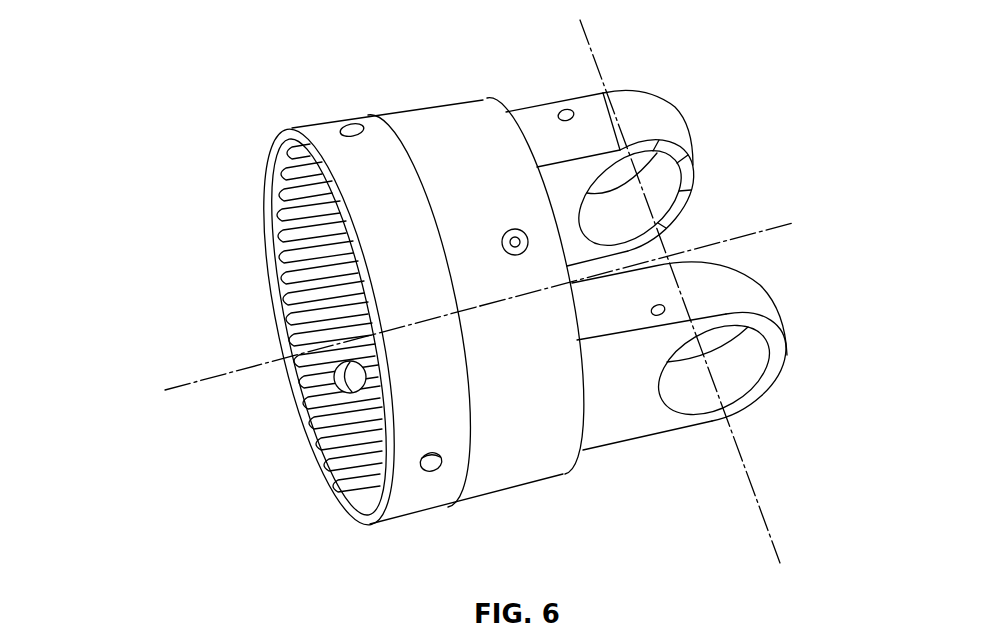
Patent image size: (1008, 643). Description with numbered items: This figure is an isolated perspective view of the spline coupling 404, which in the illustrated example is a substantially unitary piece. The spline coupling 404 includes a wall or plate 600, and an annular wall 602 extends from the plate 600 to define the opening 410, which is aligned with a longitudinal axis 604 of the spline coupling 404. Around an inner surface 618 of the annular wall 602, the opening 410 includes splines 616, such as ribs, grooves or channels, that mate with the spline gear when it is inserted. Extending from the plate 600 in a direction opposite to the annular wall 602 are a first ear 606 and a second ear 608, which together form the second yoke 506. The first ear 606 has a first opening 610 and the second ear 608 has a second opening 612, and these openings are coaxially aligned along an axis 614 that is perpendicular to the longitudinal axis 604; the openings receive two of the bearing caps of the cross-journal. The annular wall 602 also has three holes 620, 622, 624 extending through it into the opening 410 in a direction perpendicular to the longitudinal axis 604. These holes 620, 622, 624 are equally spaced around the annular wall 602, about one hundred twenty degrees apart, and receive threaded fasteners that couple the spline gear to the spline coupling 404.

The plate 600 is at (586, 462).
The annular wall 602 is at (440, 130).
The spline coupling 404 is at (372, 140).
The splines 616 is at (316, 455).
The inner surface 618 is at (277, 257).
The opening 410 is at (349, 476).
The hole 622 is at (336, 389).
The hole 620 is at (322, 128).
The hole 624 is at (433, 476).
The longitudinal axis 604 is at (172, 390).
The second yoke 506 is at (742, 248).
The axis 614 is at (766, 517).
The first ear 606 is at (719, 369).
The first opening 610 is at (748, 375).
The second ear 608 is at (640, 141).
The second opening 612 is at (701, 177).